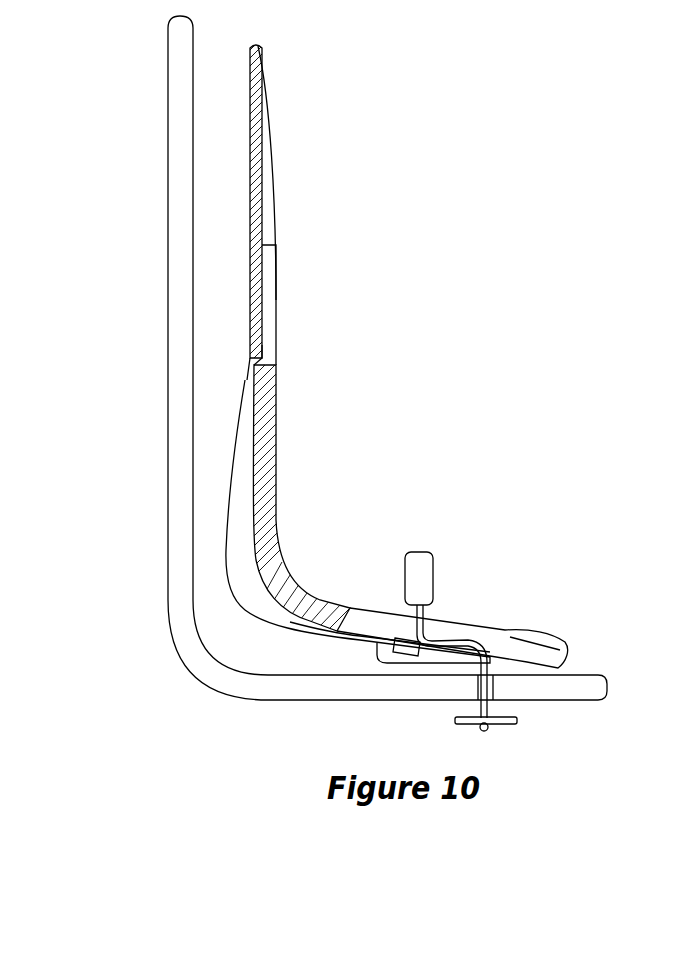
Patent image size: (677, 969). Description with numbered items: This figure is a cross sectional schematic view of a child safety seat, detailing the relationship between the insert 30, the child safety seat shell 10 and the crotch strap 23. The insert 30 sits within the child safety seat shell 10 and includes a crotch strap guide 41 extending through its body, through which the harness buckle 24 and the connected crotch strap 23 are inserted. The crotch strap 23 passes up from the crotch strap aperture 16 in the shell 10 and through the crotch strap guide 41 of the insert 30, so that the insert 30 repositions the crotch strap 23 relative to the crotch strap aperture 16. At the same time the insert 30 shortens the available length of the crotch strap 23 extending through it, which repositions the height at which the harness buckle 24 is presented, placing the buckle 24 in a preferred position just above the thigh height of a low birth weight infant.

The child safety seat shell 10 is at (180, 305).
The insert 30 is at (296, 345).
The crotch strap guide 41 is at (388, 640).
The harness buckle 24 is at (422, 573).
The crotch strap 23 is at (436, 615).
The crotch strap aperture 16 is at (493, 685).